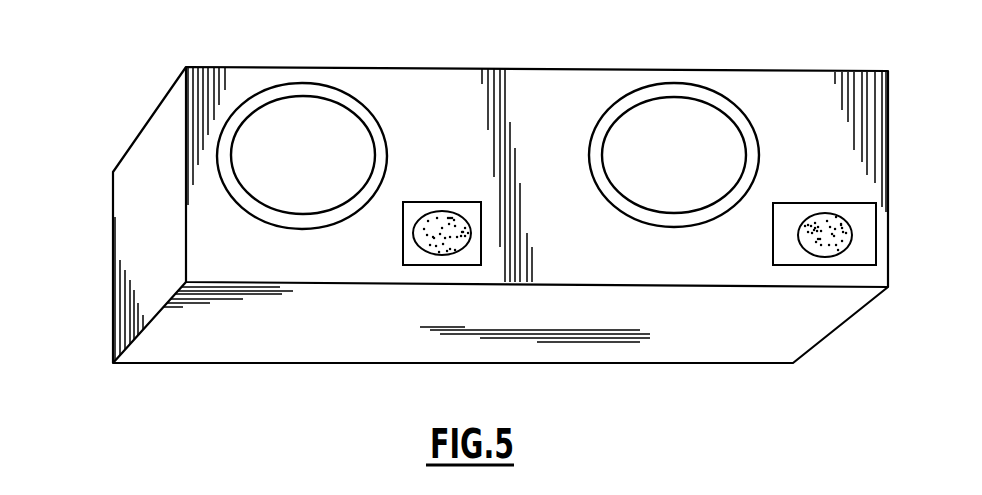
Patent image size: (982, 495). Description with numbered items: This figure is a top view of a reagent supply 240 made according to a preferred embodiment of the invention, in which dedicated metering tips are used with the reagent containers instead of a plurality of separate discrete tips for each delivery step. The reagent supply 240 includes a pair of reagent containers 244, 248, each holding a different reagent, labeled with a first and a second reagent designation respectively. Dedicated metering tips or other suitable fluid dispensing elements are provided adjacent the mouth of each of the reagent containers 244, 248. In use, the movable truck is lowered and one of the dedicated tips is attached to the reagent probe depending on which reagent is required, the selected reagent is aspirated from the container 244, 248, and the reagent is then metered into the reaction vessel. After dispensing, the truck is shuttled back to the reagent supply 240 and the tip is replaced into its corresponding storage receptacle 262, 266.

The reagent supply 240 is at (147, 225).
The reagent container 244 is at (268, 125).
The reagent container 248 is at (640, 125).
The storage receptacle 262 is at (410, 258).
The storage receptacle 266 is at (790, 258).